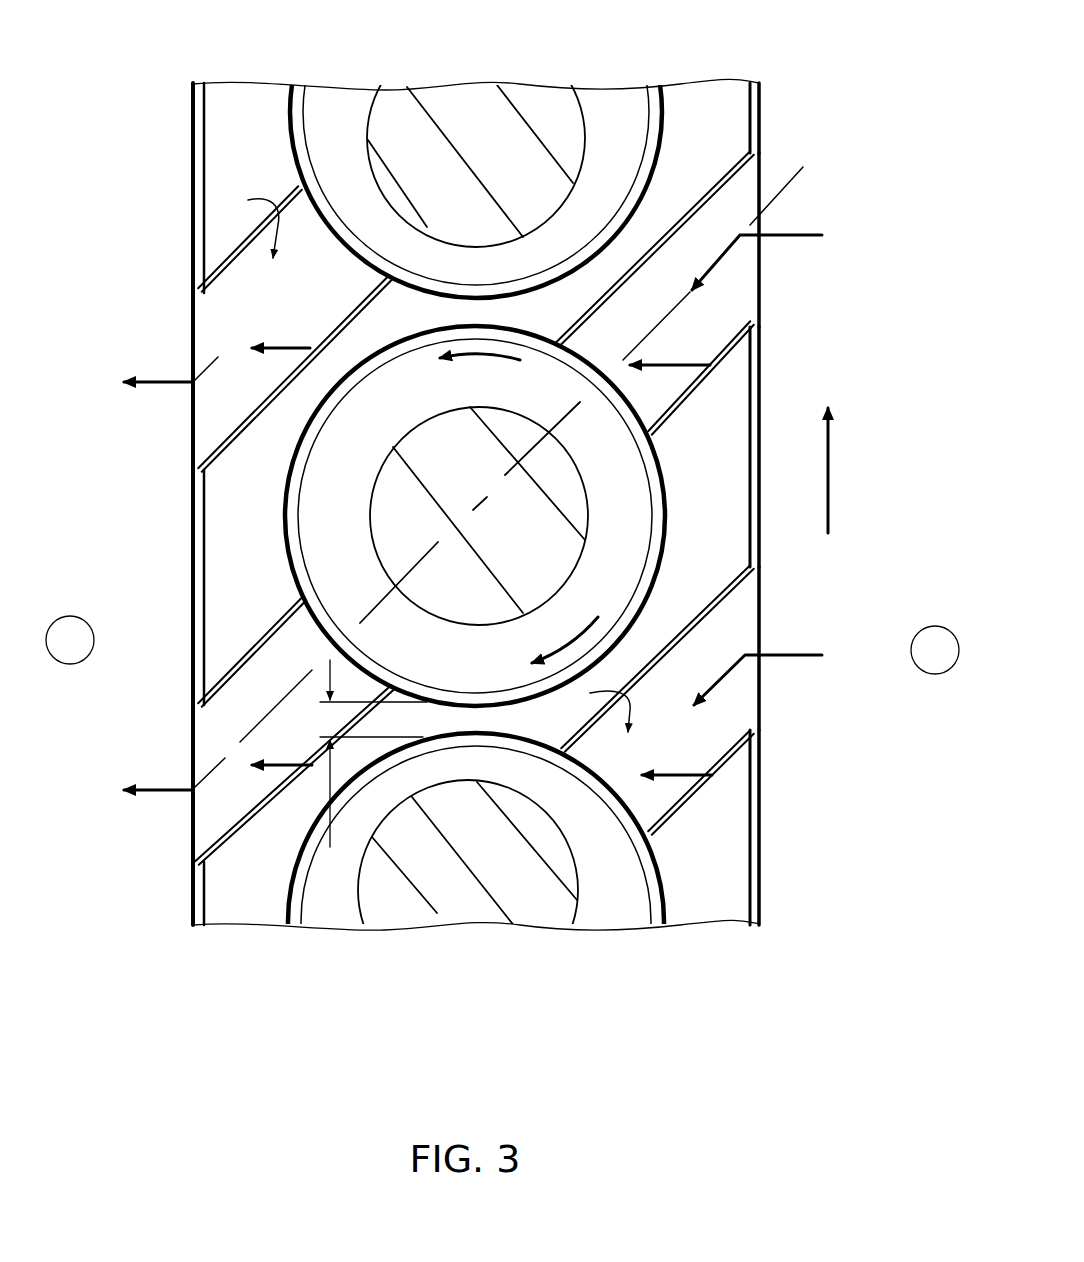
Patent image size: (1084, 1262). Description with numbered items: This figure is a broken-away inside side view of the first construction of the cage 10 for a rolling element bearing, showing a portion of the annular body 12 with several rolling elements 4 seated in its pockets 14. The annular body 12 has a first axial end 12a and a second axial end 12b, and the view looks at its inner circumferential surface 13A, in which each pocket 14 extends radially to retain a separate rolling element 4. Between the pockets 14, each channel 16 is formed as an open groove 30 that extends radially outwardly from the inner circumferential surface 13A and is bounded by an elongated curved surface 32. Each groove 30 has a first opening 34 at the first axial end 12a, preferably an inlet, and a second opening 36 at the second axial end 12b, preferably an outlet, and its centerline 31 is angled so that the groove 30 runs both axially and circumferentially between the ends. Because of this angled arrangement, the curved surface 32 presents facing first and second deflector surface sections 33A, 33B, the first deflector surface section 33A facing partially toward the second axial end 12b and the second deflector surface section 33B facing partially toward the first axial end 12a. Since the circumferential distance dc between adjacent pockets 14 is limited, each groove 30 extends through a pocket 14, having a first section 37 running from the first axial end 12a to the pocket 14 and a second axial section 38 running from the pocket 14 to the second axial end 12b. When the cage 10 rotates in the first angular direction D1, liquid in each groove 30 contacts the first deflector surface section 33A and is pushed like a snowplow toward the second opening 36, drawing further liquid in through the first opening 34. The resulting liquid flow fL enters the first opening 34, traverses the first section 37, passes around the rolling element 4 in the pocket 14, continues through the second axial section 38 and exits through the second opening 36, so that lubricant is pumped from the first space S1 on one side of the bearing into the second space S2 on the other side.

The cage 10 is at (138, 255).
The annular body 12 is at (165, 507).
The first axial end 12a is at (762, 827).
The second axial end 12b is at (192, 868).
The inner circumferential surface 13A is at (250, 592).
The pocket 14 is at (652, 118).
The channel 16 is at (810, 208).
The groove 30 is at (778, 298).
The groove centerline 31 is at (803, 162).
The curved surface 32 is at (424, 462).
The first deflector surface section 33A is at (206, 415).
The second deflector surface section 33B is at (233, 265).
The first opening 34 is at (762, 174).
The second opening 36 is at (190, 333).
The first section 37 is at (618, 305).
The second axial section 38 is at (220, 318).
The rolling element 4 is at (300, 125).
The first angular direction D1 is at (830, 466).
The first space S1 is at (935, 650).
The second space S2 is at (70, 640).
The circumferential distance dc is at (330, 847).
The liquid flow fL is at (808, 238).